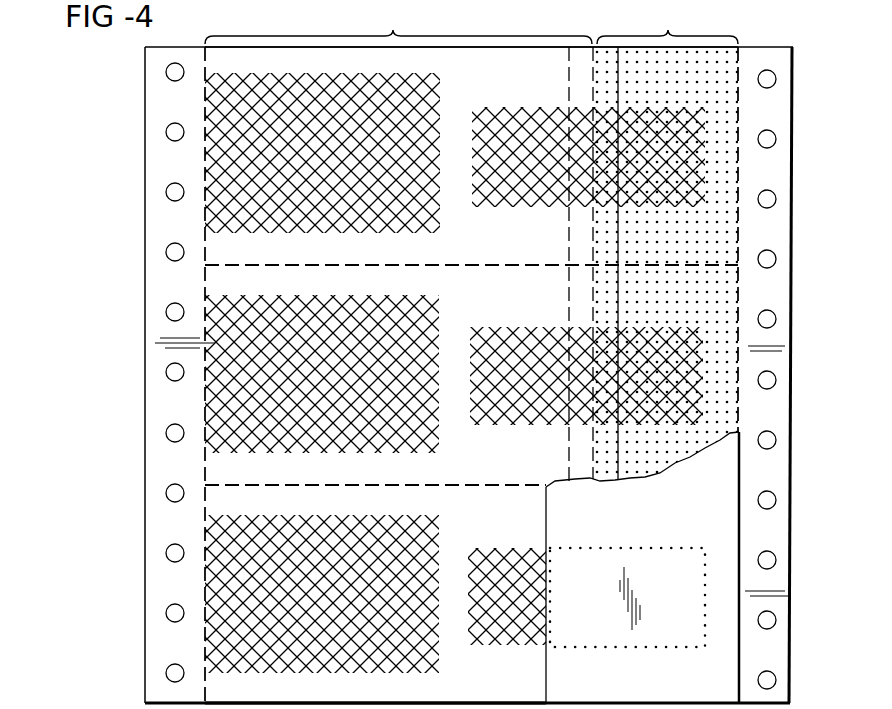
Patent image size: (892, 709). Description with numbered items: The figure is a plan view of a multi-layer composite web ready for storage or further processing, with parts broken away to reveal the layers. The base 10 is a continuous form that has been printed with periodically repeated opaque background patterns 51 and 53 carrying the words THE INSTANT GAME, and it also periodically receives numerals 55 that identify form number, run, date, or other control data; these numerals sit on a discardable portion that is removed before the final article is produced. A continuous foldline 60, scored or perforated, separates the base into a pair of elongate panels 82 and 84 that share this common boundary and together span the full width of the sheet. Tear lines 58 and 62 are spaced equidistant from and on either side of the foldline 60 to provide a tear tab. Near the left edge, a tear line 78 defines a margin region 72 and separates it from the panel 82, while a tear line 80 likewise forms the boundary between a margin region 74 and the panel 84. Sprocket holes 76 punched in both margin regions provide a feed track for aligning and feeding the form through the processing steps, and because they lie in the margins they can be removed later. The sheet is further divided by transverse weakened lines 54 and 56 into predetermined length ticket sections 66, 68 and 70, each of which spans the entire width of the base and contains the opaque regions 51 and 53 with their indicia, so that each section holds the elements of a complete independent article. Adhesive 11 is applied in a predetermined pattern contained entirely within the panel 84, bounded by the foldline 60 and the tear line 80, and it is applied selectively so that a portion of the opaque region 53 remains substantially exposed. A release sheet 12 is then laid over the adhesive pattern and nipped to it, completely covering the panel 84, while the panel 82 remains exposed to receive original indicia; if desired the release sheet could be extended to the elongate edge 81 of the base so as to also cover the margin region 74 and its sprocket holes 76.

The base 10 is at (769, 45).
The adhesive 11 is at (731, 244).
The release sheet 12 is at (729, 481).
The background pattern 51 is at (405, 235).
The background pattern 53 is at (520, 198).
The weakened line 54 is at (548, 266).
The numerals 55 is at (183, 292).
The weakened line 56 is at (505, 486).
The tear line 58 is at (568, 318).
The foldline 60 is at (593, 440).
The tear line 62 is at (622, 466).
The ticket section 66 is at (470, 83).
The ticket section 68 is at (471, 304).
The ticket section 70 is at (465, 520).
The margin region 72 is at (163, 160).
The margin region 74 is at (786, 372).
The sprocket holes 76 is at (167, 486).
The tear line 78 is at (207, 110).
The tear line 80 is at (740, 300).
The elongate edge 81 is at (791, 412).
The panel 82 is at (398, 25).
The panel 84 is at (667, 25).